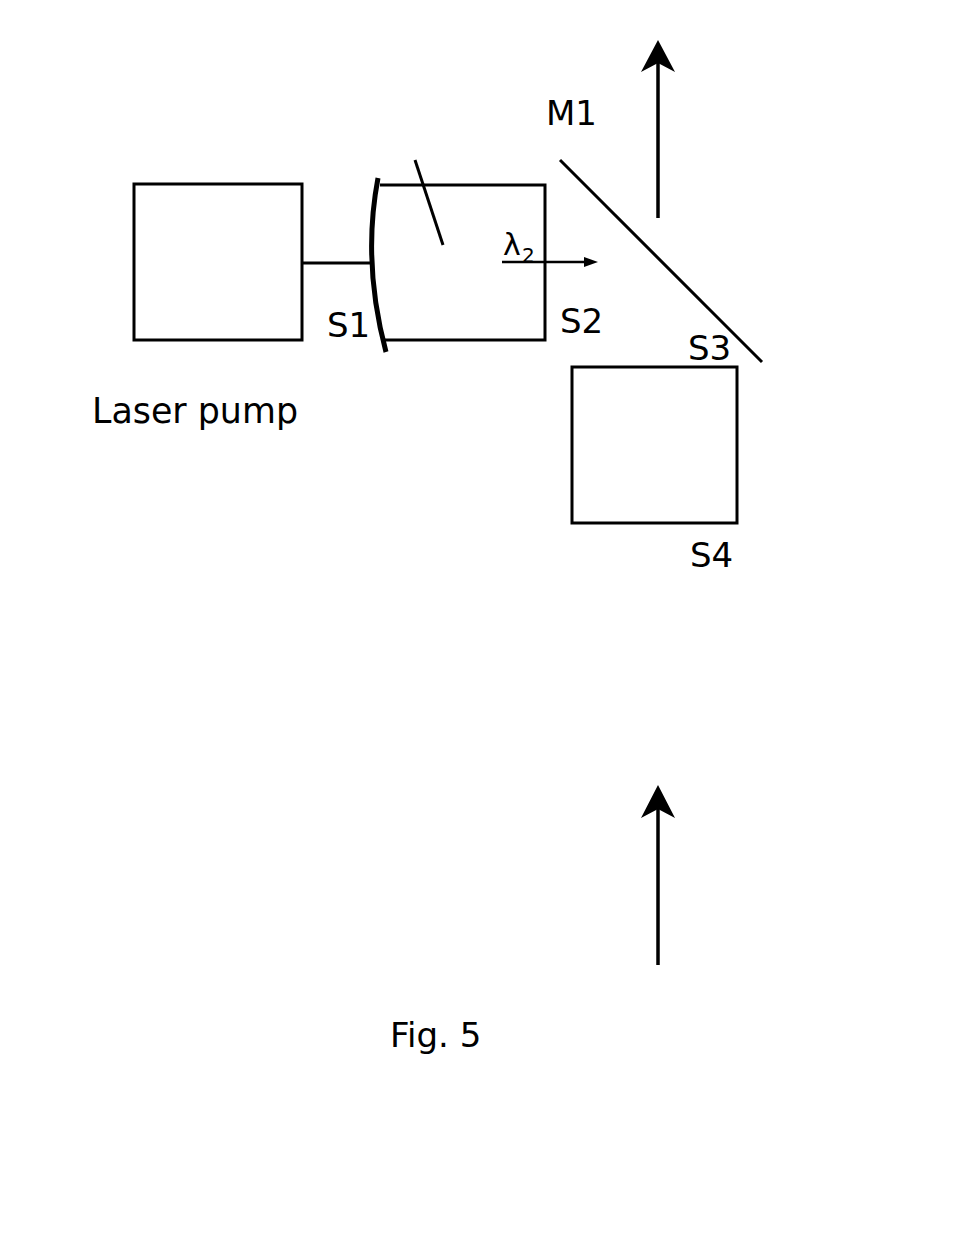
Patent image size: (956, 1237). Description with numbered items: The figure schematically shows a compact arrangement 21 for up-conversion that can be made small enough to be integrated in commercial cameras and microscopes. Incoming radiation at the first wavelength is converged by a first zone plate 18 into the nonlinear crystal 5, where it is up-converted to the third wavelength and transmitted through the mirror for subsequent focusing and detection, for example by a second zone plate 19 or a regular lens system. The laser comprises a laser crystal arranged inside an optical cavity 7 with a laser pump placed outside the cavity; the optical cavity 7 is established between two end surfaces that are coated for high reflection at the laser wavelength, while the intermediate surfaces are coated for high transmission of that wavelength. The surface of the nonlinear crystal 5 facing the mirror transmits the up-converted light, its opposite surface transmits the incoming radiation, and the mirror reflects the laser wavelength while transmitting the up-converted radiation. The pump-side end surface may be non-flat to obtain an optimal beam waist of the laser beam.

The compact arrangement 21 is at (238, 85).
The second zone plate 19 is at (787, 12).
The first zone plate 18 is at (767, 725).
The optical cavity 7 is at (502, 392).
The nonlinear crystal 5 is at (600, 472).